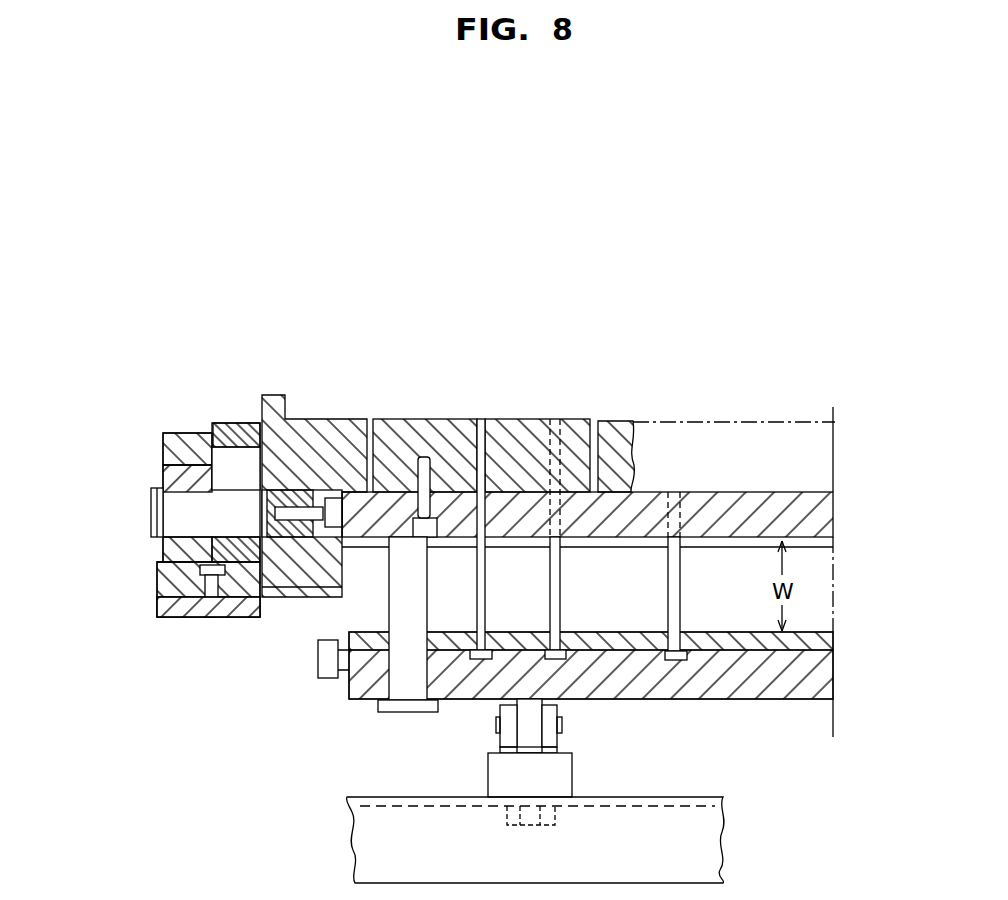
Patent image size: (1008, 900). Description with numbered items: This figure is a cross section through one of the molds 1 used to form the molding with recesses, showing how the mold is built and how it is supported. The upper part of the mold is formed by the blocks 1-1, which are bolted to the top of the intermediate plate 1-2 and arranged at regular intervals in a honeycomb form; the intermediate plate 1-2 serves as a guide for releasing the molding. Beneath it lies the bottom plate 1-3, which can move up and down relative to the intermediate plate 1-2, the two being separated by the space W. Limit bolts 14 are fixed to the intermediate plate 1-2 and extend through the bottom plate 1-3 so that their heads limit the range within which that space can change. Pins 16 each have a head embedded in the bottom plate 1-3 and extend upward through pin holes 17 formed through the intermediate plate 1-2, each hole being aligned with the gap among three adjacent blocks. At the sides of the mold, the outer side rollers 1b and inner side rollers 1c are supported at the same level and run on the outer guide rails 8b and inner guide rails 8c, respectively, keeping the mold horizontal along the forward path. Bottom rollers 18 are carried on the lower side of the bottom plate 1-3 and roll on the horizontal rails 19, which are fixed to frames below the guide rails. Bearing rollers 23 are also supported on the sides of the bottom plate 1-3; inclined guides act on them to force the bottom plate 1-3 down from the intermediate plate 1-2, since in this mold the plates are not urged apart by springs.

The mold 1 is at (748, 418).
The blocks 1-1 is at (395, 419).
The intermediate plate 1-2 is at (777, 492).
The bottom plate 1-3 is at (367, 700).
The outer side rollers 1b is at (163, 470).
The inner side rollers 1c is at (237, 480).
The outer guide rails 8b is at (162, 562).
The inner guide rails 8c is at (241, 540).
The limit bolts 14 is at (390, 712).
The pins 16 is at (473, 597).
The pin holes 17 is at (497, 520).
The bottom rollers 18 is at (560, 743).
The horizontal rails 19 is at (560, 778).
The bearing rollers 23 is at (325, 657).